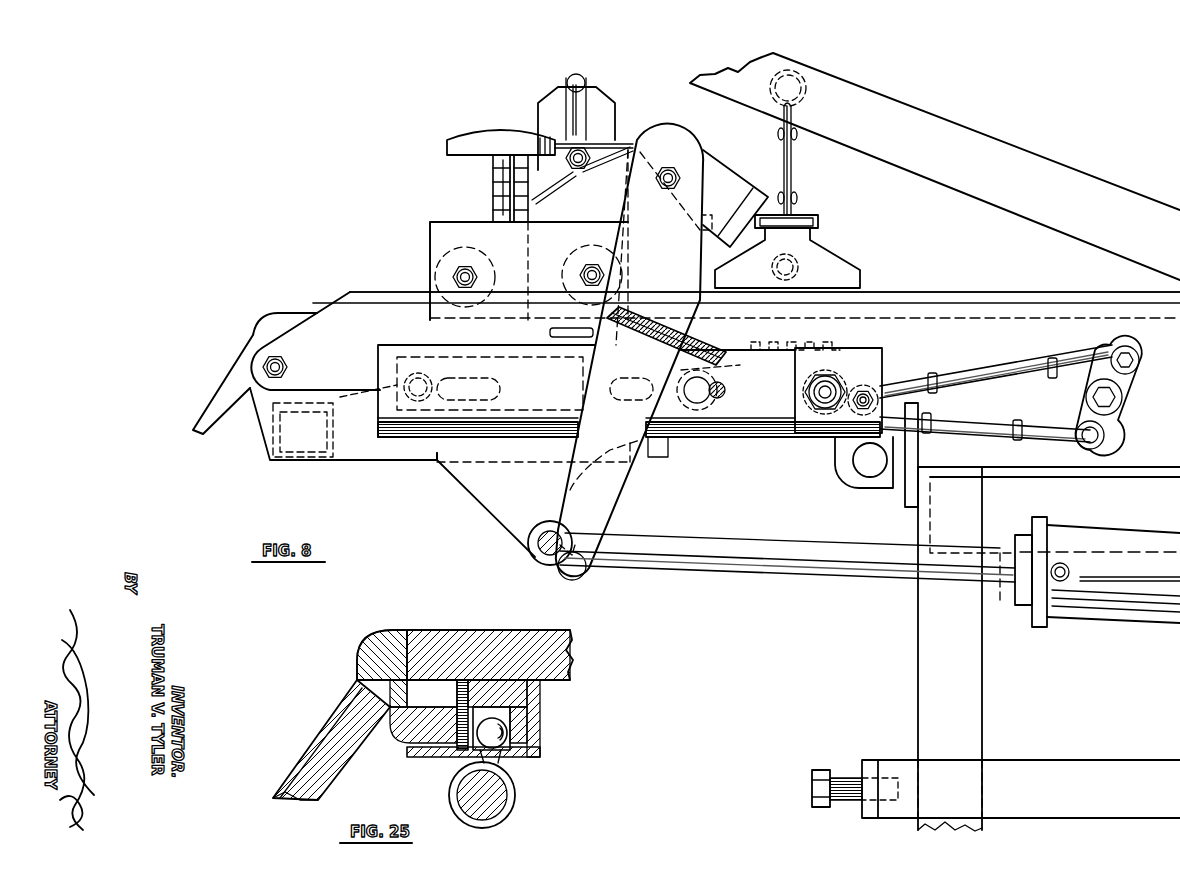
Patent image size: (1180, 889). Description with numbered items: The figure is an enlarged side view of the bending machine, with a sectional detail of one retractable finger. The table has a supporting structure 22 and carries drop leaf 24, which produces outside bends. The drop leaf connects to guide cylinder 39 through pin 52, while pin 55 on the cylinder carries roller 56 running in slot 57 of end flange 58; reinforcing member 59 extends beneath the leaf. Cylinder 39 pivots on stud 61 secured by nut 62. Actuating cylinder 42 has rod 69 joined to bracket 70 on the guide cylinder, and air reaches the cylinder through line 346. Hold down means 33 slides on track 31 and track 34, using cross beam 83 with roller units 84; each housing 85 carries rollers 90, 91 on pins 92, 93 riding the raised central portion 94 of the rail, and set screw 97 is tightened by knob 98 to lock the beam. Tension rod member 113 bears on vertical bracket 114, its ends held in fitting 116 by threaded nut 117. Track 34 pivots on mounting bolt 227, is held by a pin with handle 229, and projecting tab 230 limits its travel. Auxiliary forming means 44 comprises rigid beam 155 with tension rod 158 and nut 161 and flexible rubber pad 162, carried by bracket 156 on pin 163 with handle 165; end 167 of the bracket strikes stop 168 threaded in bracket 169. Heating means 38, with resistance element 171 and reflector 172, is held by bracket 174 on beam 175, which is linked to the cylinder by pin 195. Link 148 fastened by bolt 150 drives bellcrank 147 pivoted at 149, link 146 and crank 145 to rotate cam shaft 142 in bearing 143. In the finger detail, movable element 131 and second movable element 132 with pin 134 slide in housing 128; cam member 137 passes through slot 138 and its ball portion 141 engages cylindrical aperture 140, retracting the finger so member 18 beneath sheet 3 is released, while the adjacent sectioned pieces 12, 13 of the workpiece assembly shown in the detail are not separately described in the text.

In FIG. 8, the beam 175 is at (1103, 190).
In FIG. 8, the track 31 is at (1013, 292).
In FIG. 8, the raised central portion 94 is at (378, 292).
In FIG. 8, the roller unit 84 is at (440, 220).
In FIG. 8, the housing 85 is at (440, 237).
In FIG. 8, the pin 92 is at (470, 268).
In FIG. 8, the roller 90 is at (438, 258).
In FIG. 8, the pin 93 is at (595, 265).
In FIG. 8, the roller 91 is at (566, 258).
In FIG. 8, the set screw 97 is at (500, 175).
In FIG. 8, the cross beam 83 is at (510, 190).
In FIG. 8, the knob 98 is at (450, 140).
In FIG. 8, the hold down means 33 is at (512, 104).
In FIG. 8, the vertical bracket 114 is at (608, 105).
In FIG. 8, the tension rod member 113 is at (580, 76).
In FIG. 8, the tension rod 158 is at (600, 140).
In FIG. 8, the threaded nut 117 is at (567, 168).
In FIG. 8, the fitting 116 is at (600, 172).
In FIG. 8, the bracket 156 is at (610, 480).
In FIG. 8, the end 167 is at (585, 573).
In FIG. 8, the nut 161 is at (670, 166).
In FIG. 8, the auxiliary forming means 44 is at (740, 158).
In FIG. 8, the rigid beam 155 is at (716, 165).
In FIG. 8, the flexible rubber pad 162 is at (745, 200).
In FIG. 8, the bracket 174 is at (795, 190).
In FIG. 8, the heating means 38 is at (830, 232).
In FIG. 8, the reflector 172 is at (830, 258).
In FIG. 8, the resistance element 171 is at (800, 262).
In FIG. 8, the drop leaf 24 is at (240, 300).
In FIG. 8, the projecting tab 230 is at (225, 372).
In FIG. 8, the track 34 is at (318, 313).
In FIG. 8, the mounting bolt 227 is at (288, 358).
In FIG. 8, the end flange 58 is at (350, 448).
In FIG. 8, the reinforcing member 59 is at (268, 460).
In FIG. 8, the pin 52 is at (418, 372).
In FIG. 8, the handle 229 is at (550, 332).
In FIG. 8, the guide cylinder 39 is at (418, 440).
In FIG. 8, the bracket 70 is at (472, 478).
In FIG. 8, the pin 163 is at (660, 318).
In FIG. 8, the handle 165 is at (623, 310).
In FIG. 8, the pin 195 is at (715, 352).
In FIG. 8, the roller 56 is at (704, 412).
In FIG. 8, the pin 55 is at (694, 412).
In FIG. 8, the slot 57 is at (668, 437).
In FIG. 8, the nut 62 is at (814, 405).
In FIG. 8, the stud 61 is at (825, 405).
In FIG. 8, the bolt 150 is at (870, 388).
In FIG. 8, the crank 145 is at (848, 450).
In FIG. 8, the cam shaft 142 is at (868, 468).
In FIG. 25, the cam shaft 142 is at (508, 795).
In FIG. 8, the bearing 143 is at (900, 470).
In FIG. 8, the link 148 is at (1008, 370).
In FIG. 8, the link 146 is at (990, 428).
In FIG. 8, the bellcrank 147 is at (1108, 423).
In FIG. 8, the pivot 149 is at (1110, 394).
In FIG. 8, the supporting structure 22 is at (963, 682).
In FIG. 8, the actuating cylinder 42 is at (1135, 612).
In FIG. 8, the line 346 is at (1068, 563).
In FIG. 8, the rod 69 is at (707, 563).
In FIG. 8, the bracket 169 is at (895, 760).
In FIG. 8, the stop 168 is at (818, 770).
In FIG. 25, the sheet 3 is at (458, 630).
In FIG. 25, the table plate 13 is at (556, 650).
In FIG. 25, the member 18 is at (390, 648).
In FIG. 25, the support member 12 is at (374, 745).
In FIG. 25, the second movable element 132 is at (540, 688).
In FIG. 25, the pin 134 is at (462, 750).
In FIG. 25, the movable element 131 is at (520, 740).
In FIG. 25, the cylindrical aperture 140 is at (500, 715).
In FIG. 25, the ball portion 141 is at (505, 730).
In FIG. 25, the housing 128 is at (540, 754).
In FIG. 25, the slot 138 is at (505, 752).
In FIG. 25, the cam member 137 is at (530, 772).